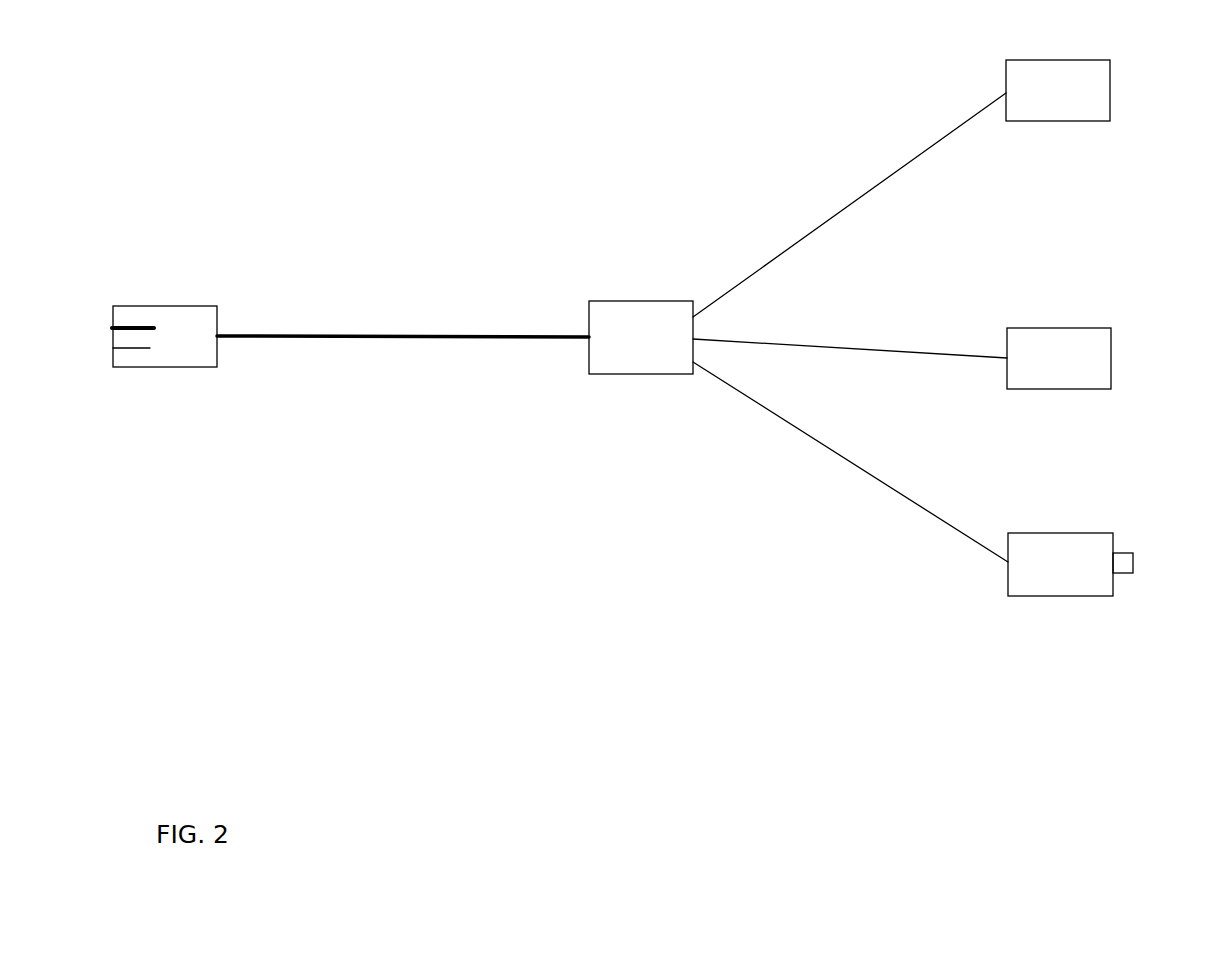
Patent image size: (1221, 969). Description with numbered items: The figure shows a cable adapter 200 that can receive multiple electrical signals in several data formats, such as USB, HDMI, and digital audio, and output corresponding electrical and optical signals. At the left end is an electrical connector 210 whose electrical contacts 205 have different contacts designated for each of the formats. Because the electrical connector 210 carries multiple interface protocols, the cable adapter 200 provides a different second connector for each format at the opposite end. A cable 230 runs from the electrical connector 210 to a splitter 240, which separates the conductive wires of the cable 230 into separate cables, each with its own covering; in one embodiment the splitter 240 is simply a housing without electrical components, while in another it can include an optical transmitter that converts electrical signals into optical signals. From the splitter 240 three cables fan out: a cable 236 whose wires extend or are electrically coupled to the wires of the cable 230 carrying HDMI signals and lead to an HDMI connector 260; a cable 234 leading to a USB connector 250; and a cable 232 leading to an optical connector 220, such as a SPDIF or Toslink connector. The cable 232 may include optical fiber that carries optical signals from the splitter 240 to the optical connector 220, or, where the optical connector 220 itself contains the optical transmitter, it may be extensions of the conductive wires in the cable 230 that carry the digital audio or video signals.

The cable adapter 200 is at (384, 602).
The electrical contacts 205 is at (202, 305).
The electrical connector 210 is at (145, 367).
The optical connector 220 is at (1050, 596).
The cable 230 is at (418, 331).
The cable 232 is at (858, 487).
The cable 234 is at (880, 349).
The cable 236 is at (910, 160).
The splitter 240 is at (640, 301).
The USB connector 250 is at (1111, 343).
The HDMI connector 260 is at (1110, 60).